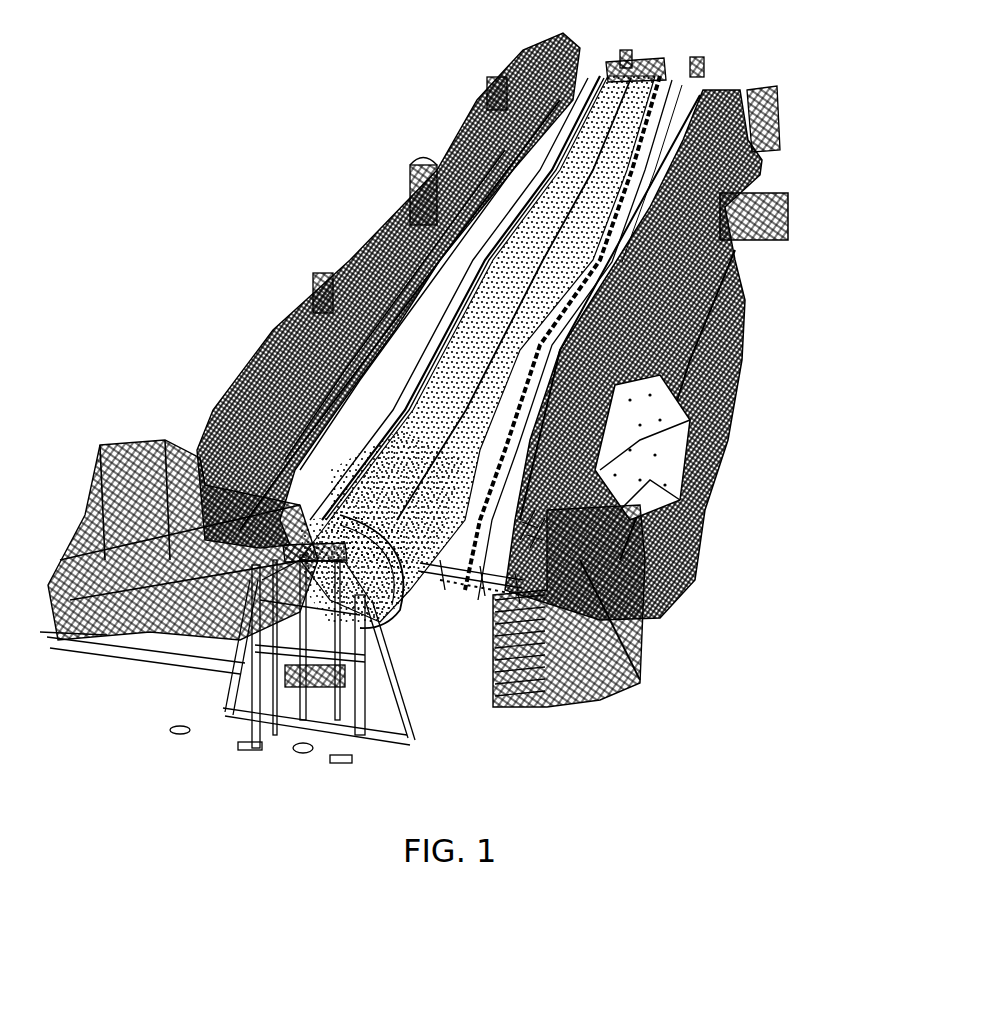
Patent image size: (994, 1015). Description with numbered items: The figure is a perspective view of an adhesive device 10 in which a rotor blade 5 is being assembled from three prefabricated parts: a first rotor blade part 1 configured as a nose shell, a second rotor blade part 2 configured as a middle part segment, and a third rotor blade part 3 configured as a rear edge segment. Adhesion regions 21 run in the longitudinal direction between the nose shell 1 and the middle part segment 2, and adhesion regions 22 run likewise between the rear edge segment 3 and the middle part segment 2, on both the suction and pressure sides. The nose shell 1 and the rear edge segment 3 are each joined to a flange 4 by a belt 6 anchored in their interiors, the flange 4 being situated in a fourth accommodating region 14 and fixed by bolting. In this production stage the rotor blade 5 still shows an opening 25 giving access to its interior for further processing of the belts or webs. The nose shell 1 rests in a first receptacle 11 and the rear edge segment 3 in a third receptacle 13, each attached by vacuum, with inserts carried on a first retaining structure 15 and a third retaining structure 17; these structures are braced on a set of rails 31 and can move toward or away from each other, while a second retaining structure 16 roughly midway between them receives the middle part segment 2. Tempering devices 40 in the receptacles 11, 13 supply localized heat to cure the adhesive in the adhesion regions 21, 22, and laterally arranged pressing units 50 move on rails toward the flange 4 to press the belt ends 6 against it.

The first rotor blade part 1 is at (655, 74).
The second rotor blade part 2 is at (646, 70).
The third rotor blade part 3 is at (617, 82).
The flange 4 is at (406, 610).
The rotor blade 5 is at (660, 42).
The belt 6 is at (440, 596).
The adhesive device 10 is at (425, 90).
The first receptacle 11 is at (640, 450).
The third receptacle 13 is at (266, 430).
The fourth accommodating region 14 is at (400, 653).
The first retaining structure 15 is at (710, 300).
The second retaining structure 16 is at (700, 86).
The third retaining structure 17 is at (356, 270).
The adhesion regions 21 is at (500, 318).
The adhesion regions 22 is at (475, 308).
The opening 25 is at (424, 478).
The rails 31 is at (724, 98).
The tempering devices 40 is at (320, 418).
The pressing units 50 is at (147, 497).